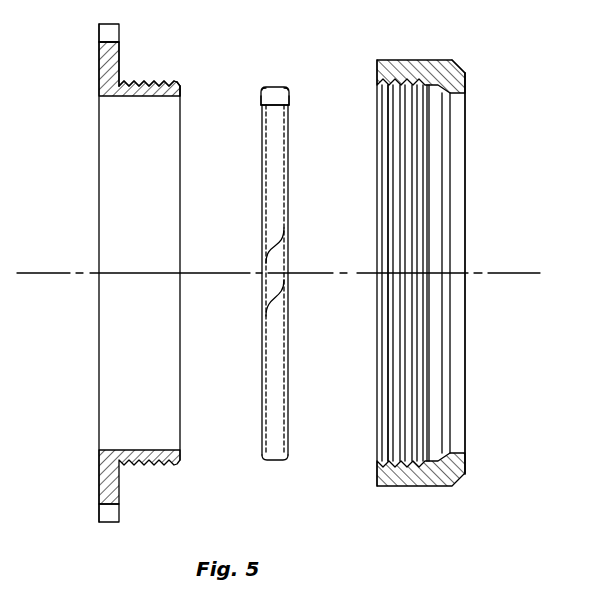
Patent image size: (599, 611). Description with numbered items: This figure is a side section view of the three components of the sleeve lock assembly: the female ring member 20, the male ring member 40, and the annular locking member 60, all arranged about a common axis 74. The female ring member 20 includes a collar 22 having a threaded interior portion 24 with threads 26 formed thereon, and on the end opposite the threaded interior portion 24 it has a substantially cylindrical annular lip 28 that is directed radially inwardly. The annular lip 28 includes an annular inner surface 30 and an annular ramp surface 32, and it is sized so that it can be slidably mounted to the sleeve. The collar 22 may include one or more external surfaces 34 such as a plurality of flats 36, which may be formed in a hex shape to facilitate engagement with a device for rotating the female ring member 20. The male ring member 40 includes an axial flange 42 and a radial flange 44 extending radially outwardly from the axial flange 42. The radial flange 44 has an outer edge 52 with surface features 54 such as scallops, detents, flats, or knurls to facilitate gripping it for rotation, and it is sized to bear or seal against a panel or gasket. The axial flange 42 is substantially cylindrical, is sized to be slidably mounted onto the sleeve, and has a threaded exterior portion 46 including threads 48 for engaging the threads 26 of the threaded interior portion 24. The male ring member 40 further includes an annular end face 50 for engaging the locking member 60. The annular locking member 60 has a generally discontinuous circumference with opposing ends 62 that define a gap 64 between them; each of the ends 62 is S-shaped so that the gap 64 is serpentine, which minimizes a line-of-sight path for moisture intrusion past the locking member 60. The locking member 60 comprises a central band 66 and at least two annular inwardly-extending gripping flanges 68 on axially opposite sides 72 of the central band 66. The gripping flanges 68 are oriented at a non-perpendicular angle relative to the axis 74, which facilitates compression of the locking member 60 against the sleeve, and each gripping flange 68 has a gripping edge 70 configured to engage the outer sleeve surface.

The female ring member 20 is at (442, 259).
The collar 22 is at (407, 60).
The threaded interior portion 24 is at (392, 357).
The threads 26 is at (390, 413).
The annular lip 28 is at (460, 184).
The annular inner surface 30 is at (432, 390).
The annular ramp surface 32 is at (445, 430).
The external surfaces 34 is at (428, 60).
The flats 36 is at (441, 61).
The male ring member 40 is at (118, 265).
The axial flange 42 is at (136, 91).
The radial flange 44 is at (100, 67).
The threaded exterior portion 46 is at (153, 57).
The threads 48 is at (132, 83).
The annular end face 50 is at (181, 88).
The outer edge 52 is at (74, 21).
The surface features 54 is at (107, 24).
The annular locking member 60 is at (280, 275).
The opposing ends 62 is at (285, 230).
The gap 64 is at (287, 250).
The central band 66 is at (276, 87).
The gripping flanges 68 is at (263, 90).
The gripping edge 70 is at (261, 98).
The axially opposite sides 72 is at (262, 107).
The axis 74 is at (33, 275).